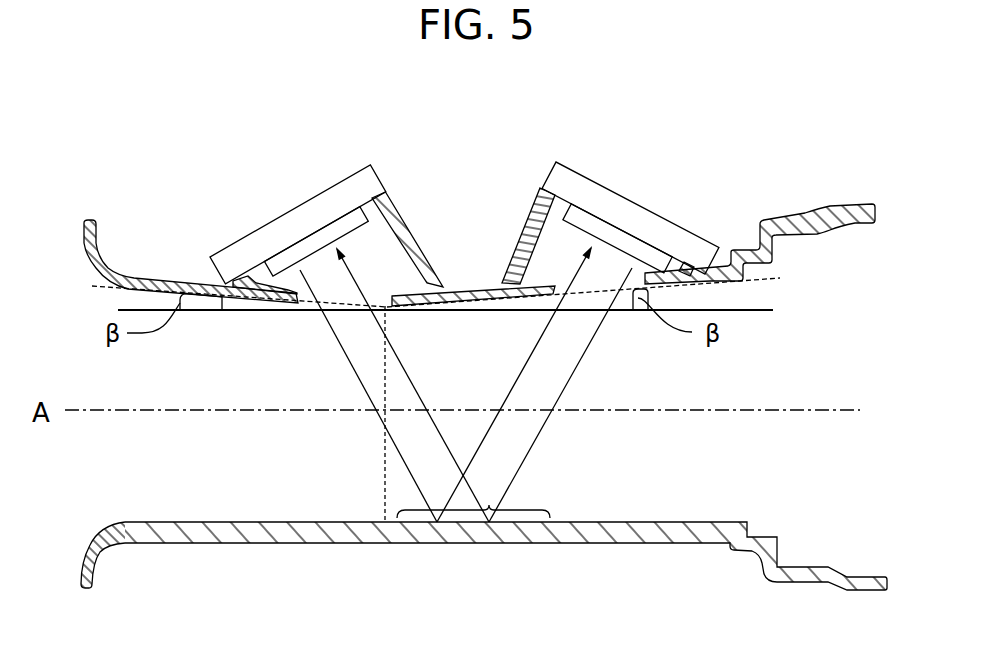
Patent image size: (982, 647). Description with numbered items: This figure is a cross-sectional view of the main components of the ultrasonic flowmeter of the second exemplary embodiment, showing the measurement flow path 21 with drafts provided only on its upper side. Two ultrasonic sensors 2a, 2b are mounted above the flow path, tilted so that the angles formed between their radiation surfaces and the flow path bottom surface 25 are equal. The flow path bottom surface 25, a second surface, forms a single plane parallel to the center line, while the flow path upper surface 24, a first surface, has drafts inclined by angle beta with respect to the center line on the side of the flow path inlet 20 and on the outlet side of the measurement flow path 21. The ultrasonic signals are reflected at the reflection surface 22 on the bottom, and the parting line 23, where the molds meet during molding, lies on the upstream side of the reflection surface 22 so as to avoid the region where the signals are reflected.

The ultrasonic sensor 2a is at (303, 204).
The ultrasonic sensor 2b is at (582, 186).
The flow path inlet 20 is at (146, 276).
The measurement flow path 21 is at (790, 218).
The reflection surface 22 is at (473, 491).
The parting line 23 is at (385, 478).
The flow path upper surface 24 is at (223, 298).
The flow path bottom surface 25 is at (137, 522).